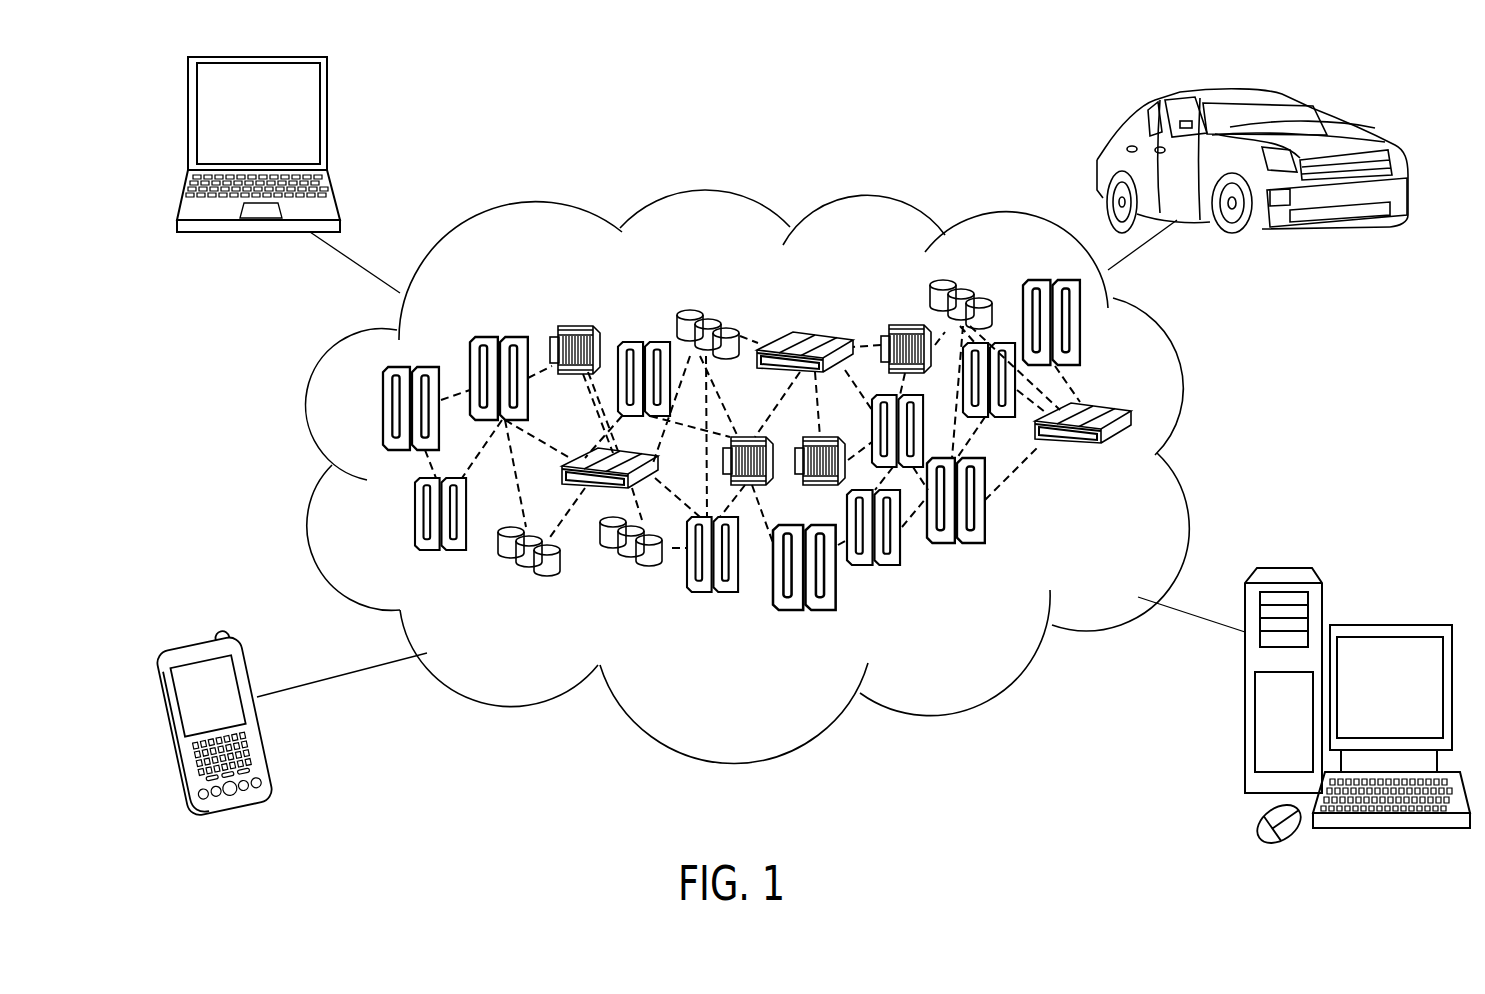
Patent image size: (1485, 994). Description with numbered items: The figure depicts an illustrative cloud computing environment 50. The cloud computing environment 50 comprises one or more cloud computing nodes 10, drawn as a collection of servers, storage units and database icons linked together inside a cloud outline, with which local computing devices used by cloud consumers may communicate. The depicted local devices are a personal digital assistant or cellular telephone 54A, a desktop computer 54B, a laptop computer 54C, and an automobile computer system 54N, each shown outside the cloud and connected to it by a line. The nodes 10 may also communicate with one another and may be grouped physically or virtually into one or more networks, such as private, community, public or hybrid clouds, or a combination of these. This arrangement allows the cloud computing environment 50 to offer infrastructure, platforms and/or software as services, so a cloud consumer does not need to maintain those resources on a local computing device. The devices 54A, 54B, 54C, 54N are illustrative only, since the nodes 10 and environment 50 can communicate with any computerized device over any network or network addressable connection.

The cloud computing environment 50 is at (1178, 378).
The cloud computing nodes 10 is at (1158, 474).
The personal digital assistant or cellular telephone 54A is at (165, 730).
The desktop computer 54B is at (1383, 626).
The laptop computer 54C is at (188, 120).
The automobile computer system 54N is at (1308, 115).